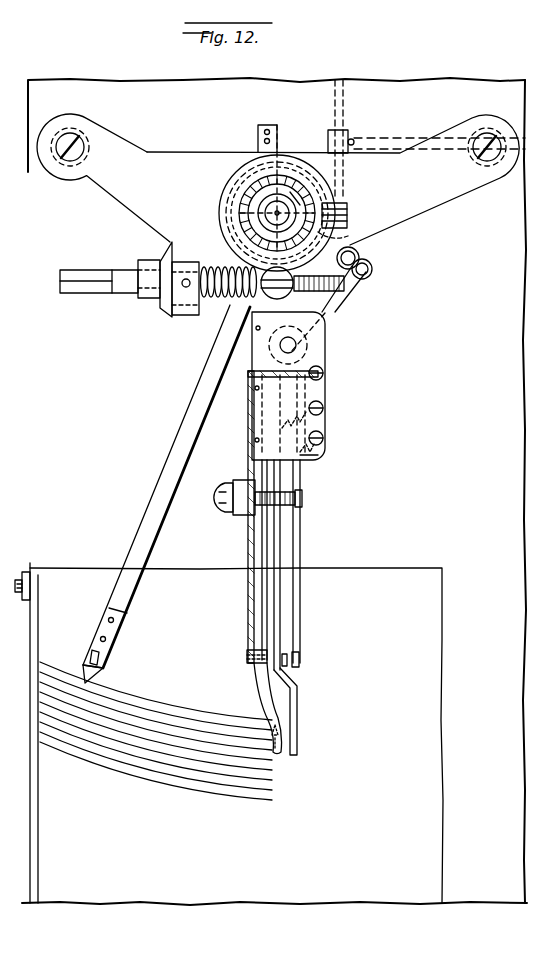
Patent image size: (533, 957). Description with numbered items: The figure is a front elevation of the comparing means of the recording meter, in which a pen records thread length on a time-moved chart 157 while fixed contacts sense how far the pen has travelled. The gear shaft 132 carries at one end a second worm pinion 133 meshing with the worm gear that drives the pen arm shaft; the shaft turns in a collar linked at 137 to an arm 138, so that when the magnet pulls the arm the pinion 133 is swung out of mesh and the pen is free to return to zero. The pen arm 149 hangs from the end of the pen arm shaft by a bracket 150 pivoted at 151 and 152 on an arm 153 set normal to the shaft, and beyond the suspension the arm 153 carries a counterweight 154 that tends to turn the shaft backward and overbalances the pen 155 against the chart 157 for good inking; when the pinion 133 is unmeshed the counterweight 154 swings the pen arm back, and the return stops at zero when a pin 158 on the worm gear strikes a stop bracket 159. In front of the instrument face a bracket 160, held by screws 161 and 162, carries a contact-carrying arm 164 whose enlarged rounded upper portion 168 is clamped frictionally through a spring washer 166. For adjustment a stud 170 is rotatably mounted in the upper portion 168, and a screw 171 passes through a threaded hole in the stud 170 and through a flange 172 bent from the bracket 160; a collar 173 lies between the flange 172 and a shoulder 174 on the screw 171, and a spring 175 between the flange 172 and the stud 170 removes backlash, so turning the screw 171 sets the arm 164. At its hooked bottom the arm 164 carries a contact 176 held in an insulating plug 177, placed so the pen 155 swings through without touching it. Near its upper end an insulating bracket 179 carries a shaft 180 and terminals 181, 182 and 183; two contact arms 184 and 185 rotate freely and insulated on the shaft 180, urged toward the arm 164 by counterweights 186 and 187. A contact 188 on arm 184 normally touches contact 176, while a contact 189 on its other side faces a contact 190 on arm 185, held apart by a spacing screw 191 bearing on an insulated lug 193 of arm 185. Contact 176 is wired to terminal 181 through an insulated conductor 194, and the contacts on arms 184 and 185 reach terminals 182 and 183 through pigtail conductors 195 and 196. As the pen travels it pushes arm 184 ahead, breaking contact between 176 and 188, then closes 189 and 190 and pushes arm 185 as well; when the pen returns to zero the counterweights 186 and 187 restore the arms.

The gear shaft 132 is at (346, 103).
The second worm pinion 133 is at (347, 206).
The link 137 is at (348, 131).
The arm 138 is at (390, 135).
The pen arm 149 is at (170, 462).
The bracket 150 is at (229, 232).
The pivot 151 is at (238, 196).
The pivot 152 is at (319, 269).
The arm 153 is at (240, 214).
The counterweight 154 is at (345, 232).
The pen 155 is at (92, 682).
The chart 157 is at (385, 572).
The pin 158 is at (248, 168).
The stop bracket 159 is at (257, 136).
The bracket 160 is at (108, 198).
The screw 161 is at (74, 142).
The screw 162 is at (487, 130).
The contact-carrying arm 164 is at (248, 585).
The spring washer 166 is at (292, 193).
The enlarged rounded upper portion 168 is at (289, 156).
The stud 170 is at (283, 296).
The screw 171 is at (338, 292).
The flange 172 is at (166, 319).
The collar 173 is at (148, 297).
The shoulder 174 is at (138, 277).
The spring 175 is at (232, 296).
The contact 176 is at (262, 675).
The insulating plug 177 is at (252, 664).
The insulating bracket 179 is at (300, 456).
The shaft 180 is at (296, 345).
The terminal 181 is at (324, 372).
The terminal 182 is at (324, 407).
The terminal 183 is at (324, 437).
The contact arm 184 is at (282, 535).
The contact arm 185 is at (302, 545).
The counterweight 186 is at (360, 250).
The counterweight 187 is at (373, 267).
The contact 188 is at (292, 680).
The contact 189 is at (286, 654).
The contact 190 is at (299, 657).
The spacing screw 191 is at (228, 483).
The insulated lug 193 is at (303, 498).
The insulated conductor 194 is at (248, 441).
The pigtail conductor 195 is at (307, 421).
The pigtail conductor 196 is at (313, 455).